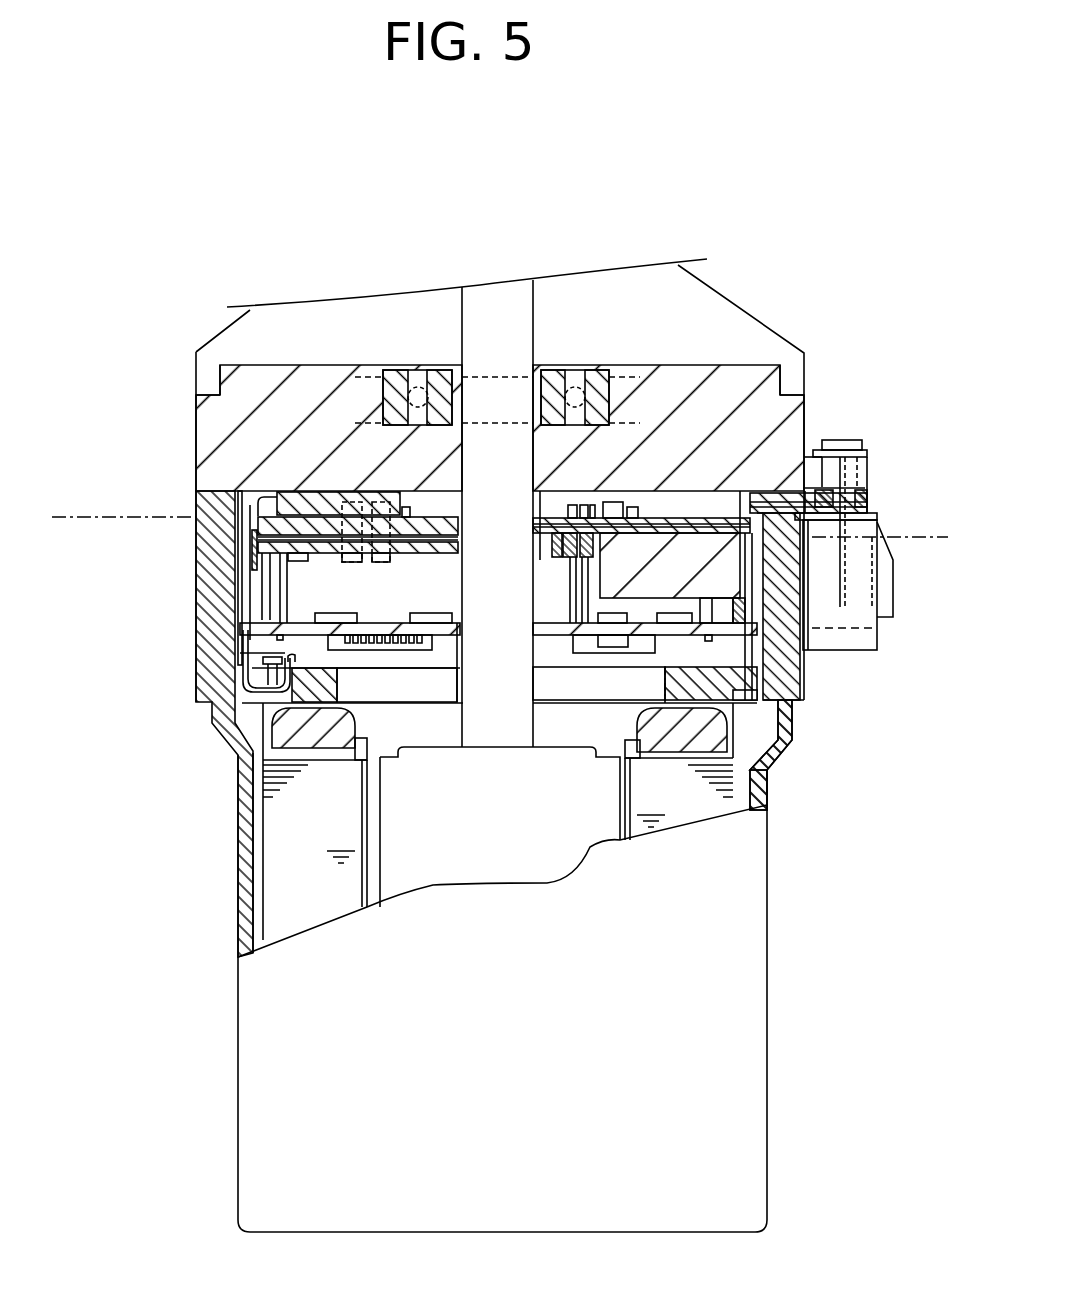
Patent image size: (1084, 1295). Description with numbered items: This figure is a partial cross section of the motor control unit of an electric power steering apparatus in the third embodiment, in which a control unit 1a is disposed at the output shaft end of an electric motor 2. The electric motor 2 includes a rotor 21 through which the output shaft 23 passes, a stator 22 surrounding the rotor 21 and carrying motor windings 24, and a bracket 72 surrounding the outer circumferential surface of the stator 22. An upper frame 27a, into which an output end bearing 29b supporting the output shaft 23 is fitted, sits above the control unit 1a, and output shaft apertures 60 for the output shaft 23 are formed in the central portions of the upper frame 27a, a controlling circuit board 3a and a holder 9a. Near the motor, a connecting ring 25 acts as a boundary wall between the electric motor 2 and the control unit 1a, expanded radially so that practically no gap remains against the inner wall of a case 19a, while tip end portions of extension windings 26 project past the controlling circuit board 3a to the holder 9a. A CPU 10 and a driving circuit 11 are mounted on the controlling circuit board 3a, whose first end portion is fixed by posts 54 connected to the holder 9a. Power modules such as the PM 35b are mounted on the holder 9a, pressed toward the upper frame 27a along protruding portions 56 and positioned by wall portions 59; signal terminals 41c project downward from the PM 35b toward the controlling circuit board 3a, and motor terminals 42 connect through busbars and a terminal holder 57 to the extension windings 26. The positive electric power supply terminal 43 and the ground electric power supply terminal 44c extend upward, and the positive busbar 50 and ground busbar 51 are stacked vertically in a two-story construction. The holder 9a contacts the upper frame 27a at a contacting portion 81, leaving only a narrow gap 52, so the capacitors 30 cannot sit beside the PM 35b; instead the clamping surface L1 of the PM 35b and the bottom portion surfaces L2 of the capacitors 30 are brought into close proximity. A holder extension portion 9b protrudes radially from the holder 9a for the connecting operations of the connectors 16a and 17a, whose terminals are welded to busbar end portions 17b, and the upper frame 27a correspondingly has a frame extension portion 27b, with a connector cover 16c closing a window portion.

The control unit 1a is at (200, 522).
The electric motor 2 is at (765, 1050).
The controlling circuit board 3a is at (808, 645).
The holder 9a is at (628, 528).
The holder extension portion 9b is at (808, 508).
The CPU 10 is at (373, 650).
The driving circuit 11 is at (590, 637).
The connector 16a is at (880, 523).
The connector cover 16c is at (862, 470).
The connector 17a is at (805, 592).
The busbar end portions 17b is at (767, 658).
The case 19a is at (242, 636).
The rotor 21 is at (590, 847).
The stator 22 is at (250, 897).
The output shaft 23 is at (523, 735).
The motor windings 24 is at (750, 760).
The connecting ring 25 is at (767, 753).
The extension windings 26 is at (243, 668).
The upper frame 27a is at (195, 417).
The frame extension portion 27b is at (806, 470).
The output end bearing 29b is at (607, 372).
The capacitors 30 is at (712, 505).
The PM 35b is at (290, 490).
The signal terminals 41c is at (262, 700).
The motor terminals 42 is at (240, 560).
The electric power supply terminal 43 is at (352, 565).
The electric power supply terminal 44c is at (381, 565).
The electric power supply busbar 50 is at (780, 500).
The ground busbar 51 is at (790, 497).
The gap 52 is at (660, 520).
The posts 54 is at (747, 672).
The protruding portions 56 is at (272, 497).
The terminal holder 57 is at (242, 585).
The wall portions 59 is at (398, 497).
The output shaft aperture 60 is at (465, 445).
The bracket 72 is at (245, 933).
The contacting portion 81 is at (845, 440).
The clamping surface L1 is at (70, 505).
The bottom portion surfaces L2 is at (927, 550).